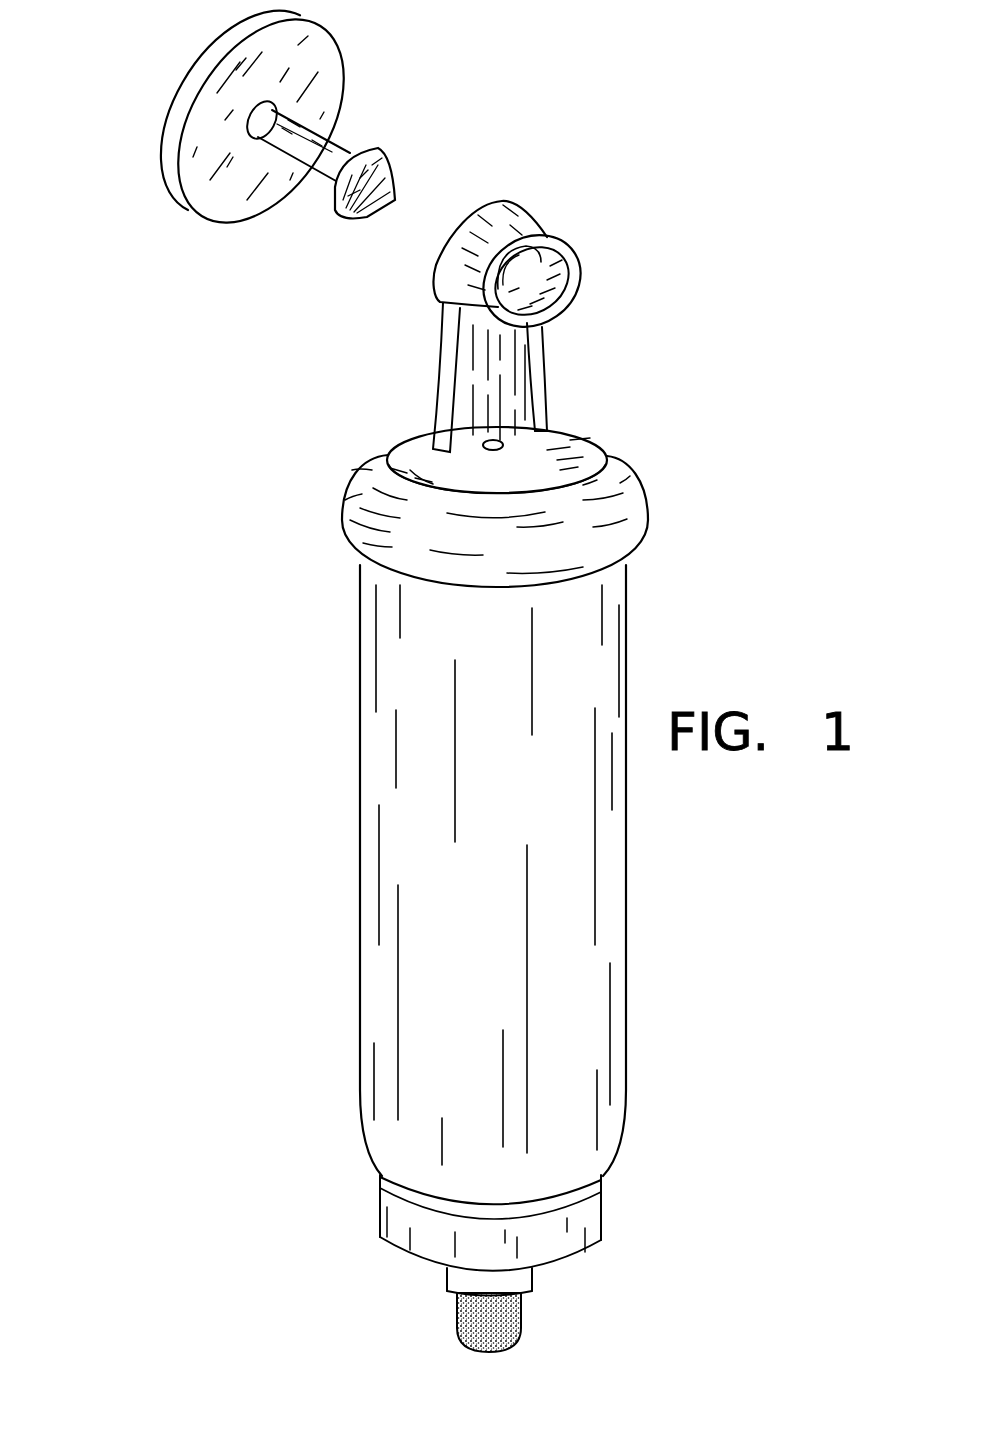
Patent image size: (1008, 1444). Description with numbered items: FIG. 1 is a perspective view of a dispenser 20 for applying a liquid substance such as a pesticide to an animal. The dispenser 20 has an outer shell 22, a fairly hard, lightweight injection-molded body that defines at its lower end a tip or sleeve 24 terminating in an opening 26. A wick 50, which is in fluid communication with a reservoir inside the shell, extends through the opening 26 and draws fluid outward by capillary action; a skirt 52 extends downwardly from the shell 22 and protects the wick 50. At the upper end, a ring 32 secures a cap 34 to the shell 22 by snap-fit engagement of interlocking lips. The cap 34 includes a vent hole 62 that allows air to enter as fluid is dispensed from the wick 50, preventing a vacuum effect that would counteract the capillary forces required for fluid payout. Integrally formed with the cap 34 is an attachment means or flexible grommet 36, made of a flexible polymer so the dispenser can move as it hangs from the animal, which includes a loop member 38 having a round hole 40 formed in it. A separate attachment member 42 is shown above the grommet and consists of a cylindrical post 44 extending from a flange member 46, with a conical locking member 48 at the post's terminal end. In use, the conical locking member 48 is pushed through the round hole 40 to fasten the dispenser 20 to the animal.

The dispenser 20 is at (240, 629).
The outer shell 22 is at (358, 770).
The tip or sleeve 24 is at (455, 1277).
The opening 26 is at (456, 1297).
The ring 32 is at (646, 513).
The cap 34 is at (607, 444).
The attachment means or flexible grommet 36 is at (580, 364).
The loop member 38 is at (578, 280).
The round hole 40 is at (513, 271).
The attachment member 42 is at (386, 28).
The cylindrical post 44 is at (338, 143).
The flange member 46 is at (187, 180).
The conical locking member 48 is at (393, 181).
The wick 50 is at (520, 1331).
The skirt 52 is at (584, 1226).
The vent hole 62 is at (483, 446).